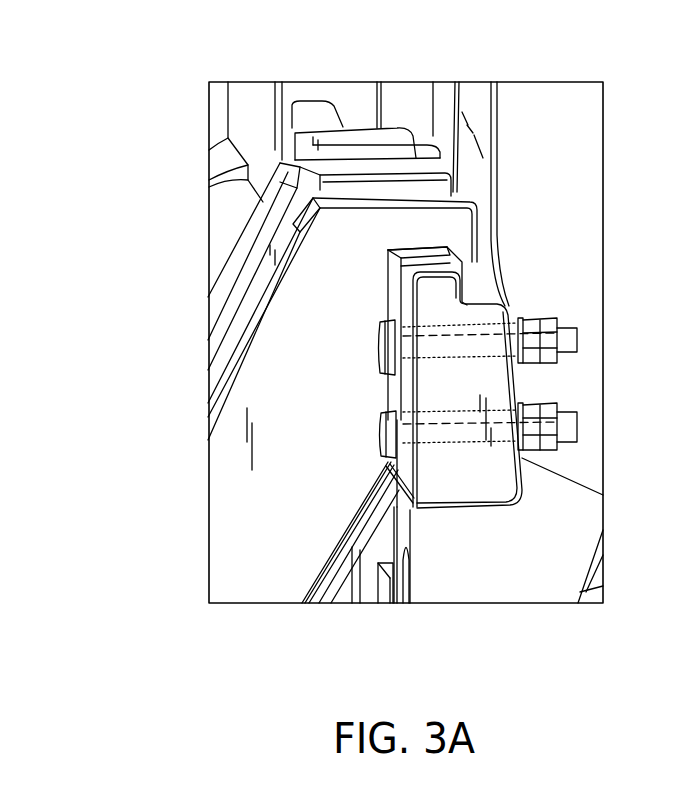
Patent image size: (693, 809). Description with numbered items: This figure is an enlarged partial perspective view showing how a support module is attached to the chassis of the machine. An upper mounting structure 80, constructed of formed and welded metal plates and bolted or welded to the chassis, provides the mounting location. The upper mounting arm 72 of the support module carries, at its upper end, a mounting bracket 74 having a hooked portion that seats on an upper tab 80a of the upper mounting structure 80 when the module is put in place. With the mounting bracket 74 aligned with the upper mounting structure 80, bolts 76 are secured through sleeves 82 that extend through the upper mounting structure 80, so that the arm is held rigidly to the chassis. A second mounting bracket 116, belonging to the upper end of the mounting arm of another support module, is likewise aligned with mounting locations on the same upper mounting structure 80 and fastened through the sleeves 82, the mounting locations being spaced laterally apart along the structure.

The upper mounting arm 72 is at (283, 547).
The mounting bracket 74 is at (400, 308).
The bolt 76 is at (570, 405).
The upper mounting structure 80 is at (515, 513).
The upper tab 80a is at (440, 287).
The sleeve 82 is at (494, 312).
The mounting bracket 116 is at (400, 130).